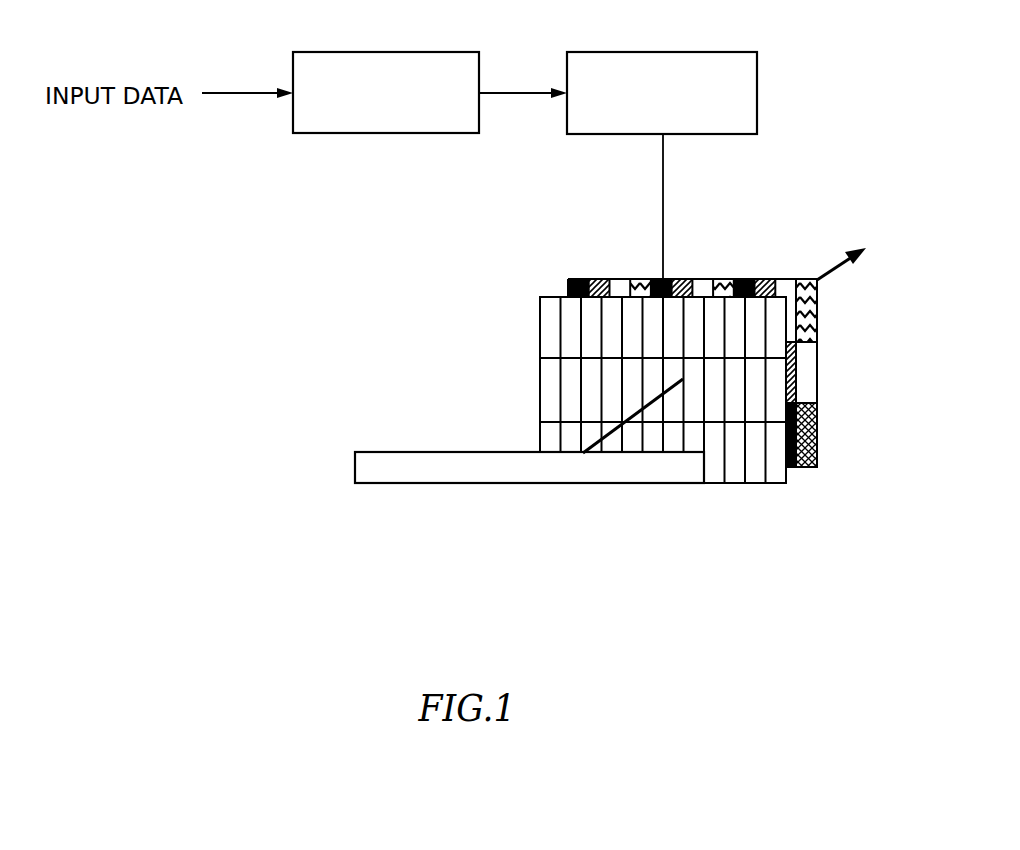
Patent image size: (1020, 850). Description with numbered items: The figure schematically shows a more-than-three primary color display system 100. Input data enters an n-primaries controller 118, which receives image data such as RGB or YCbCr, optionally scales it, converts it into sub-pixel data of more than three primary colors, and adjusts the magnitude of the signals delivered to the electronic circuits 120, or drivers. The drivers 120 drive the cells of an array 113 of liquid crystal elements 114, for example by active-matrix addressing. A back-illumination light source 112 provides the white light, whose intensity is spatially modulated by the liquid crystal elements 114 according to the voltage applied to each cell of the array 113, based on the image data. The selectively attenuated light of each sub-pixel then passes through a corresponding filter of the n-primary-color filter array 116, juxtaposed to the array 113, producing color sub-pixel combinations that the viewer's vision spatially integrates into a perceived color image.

The more-than-three primary color display system 100 is at (172, 380).
The light source 112 is at (447, 485).
The array of liquid crystal elements 113 is at (785, 493).
The liquid crystal elements 114 is at (548, 336).
The n-primary-color filter array 116 is at (711, 272).
The n-primaries controller 118 is at (401, 52).
The electronic circuits 120 is at (676, 52).